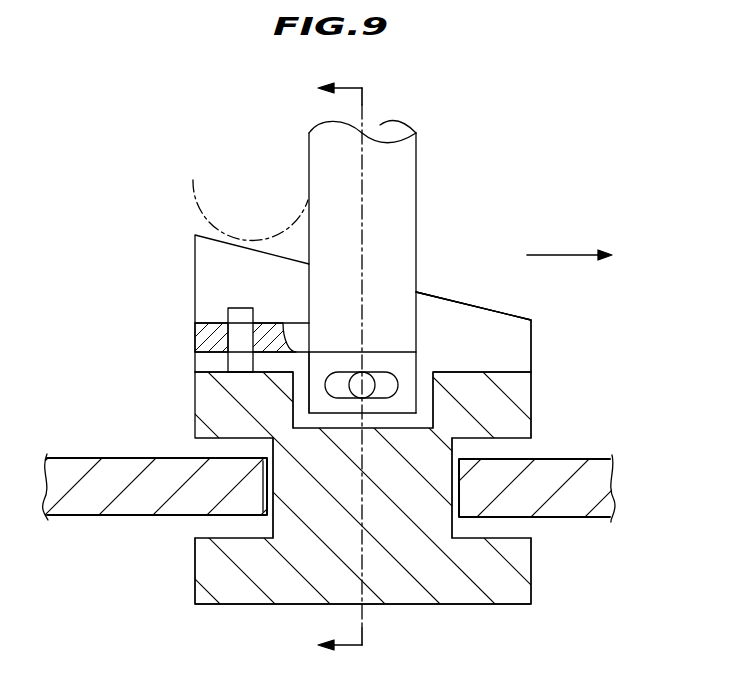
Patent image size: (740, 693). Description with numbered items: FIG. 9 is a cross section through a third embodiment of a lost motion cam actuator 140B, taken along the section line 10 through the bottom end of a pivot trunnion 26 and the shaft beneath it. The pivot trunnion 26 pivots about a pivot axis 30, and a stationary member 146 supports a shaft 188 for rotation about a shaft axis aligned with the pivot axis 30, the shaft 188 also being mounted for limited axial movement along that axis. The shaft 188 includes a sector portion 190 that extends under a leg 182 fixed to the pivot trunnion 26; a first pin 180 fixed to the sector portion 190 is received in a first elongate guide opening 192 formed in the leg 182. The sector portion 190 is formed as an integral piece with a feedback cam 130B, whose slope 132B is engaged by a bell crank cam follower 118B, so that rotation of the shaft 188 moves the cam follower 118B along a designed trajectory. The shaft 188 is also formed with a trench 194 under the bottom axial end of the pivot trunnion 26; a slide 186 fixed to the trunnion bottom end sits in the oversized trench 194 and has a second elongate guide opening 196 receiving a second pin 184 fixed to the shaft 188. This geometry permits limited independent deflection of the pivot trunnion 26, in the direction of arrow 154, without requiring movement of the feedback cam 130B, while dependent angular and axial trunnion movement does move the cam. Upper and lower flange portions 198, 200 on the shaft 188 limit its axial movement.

The section line 10 is at (348, 81).
The pivot axis 30 is at (364, 167).
The pivot trunnion 26 is at (403, 210).
The cam follower 118B is at (195, 206).
The lost motion cam actuator 140B is at (140, 409).
The feedback cam 130B is at (474, 294).
The slope 132B is at (507, 295).
The arrow 154 is at (560, 254).
The second elongate guide opening 196 is at (382, 368).
The sector portion 190 is at (213, 371).
The trench 194 is at (400, 428).
The slide 186 is at (407, 367).
The second pin 184 is at (362, 386).
The upper flange portion 198 is at (532, 398).
The first pin 180 is at (240, 308).
The leg 182 is at (197, 335).
The first elongate guide opening 192 is at (227, 320).
The stationary member 146 is at (598, 463).
The shaft 188 is at (277, 517).
The lower flange portion 200 is at (220, 593).